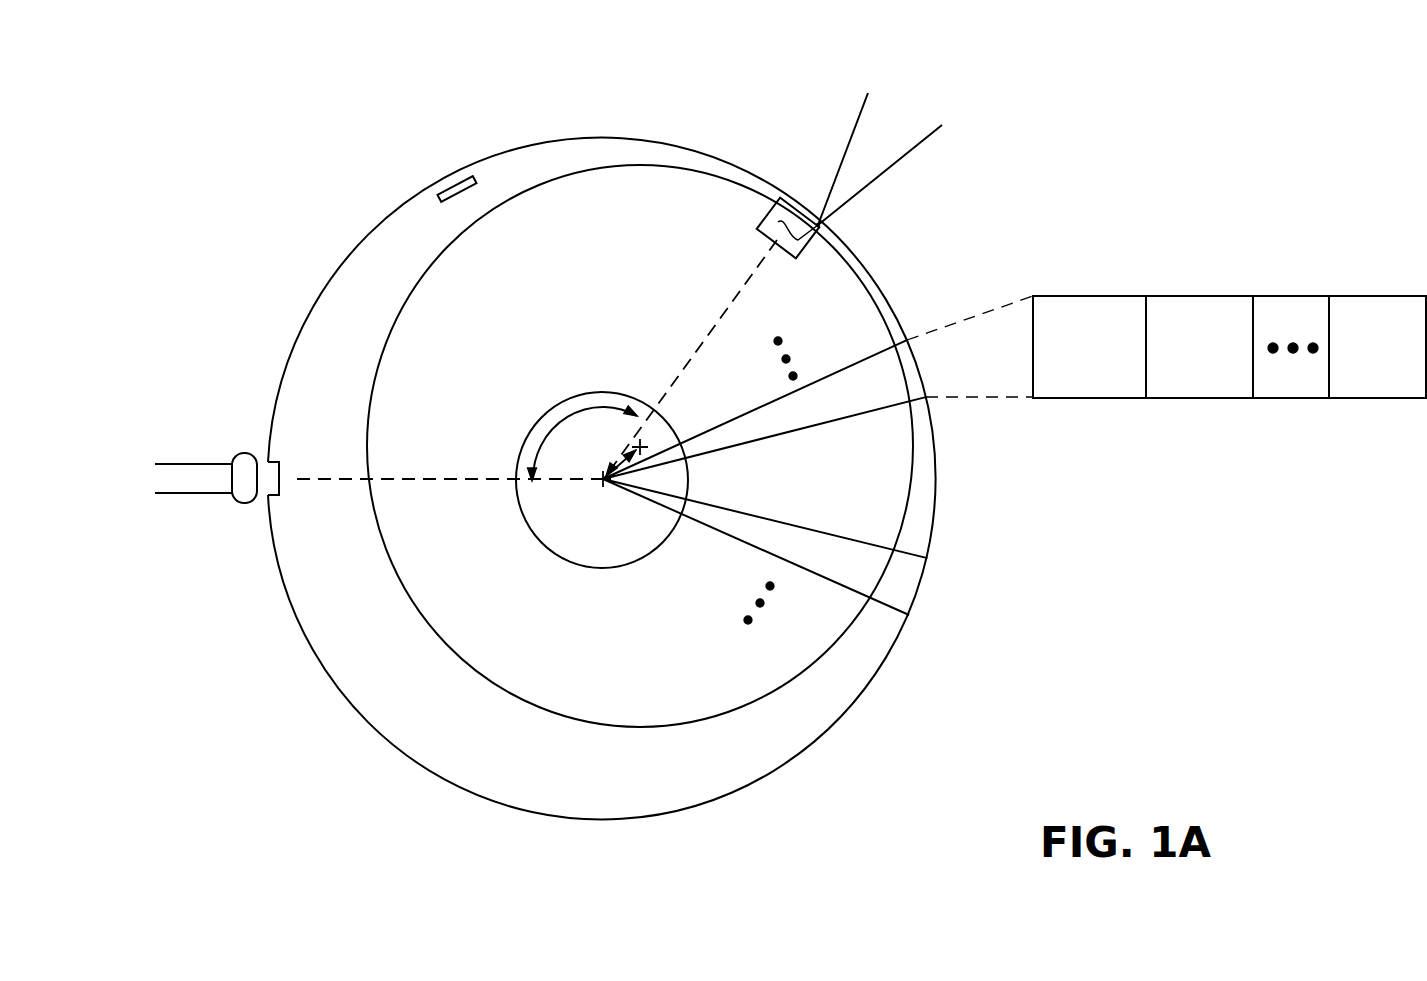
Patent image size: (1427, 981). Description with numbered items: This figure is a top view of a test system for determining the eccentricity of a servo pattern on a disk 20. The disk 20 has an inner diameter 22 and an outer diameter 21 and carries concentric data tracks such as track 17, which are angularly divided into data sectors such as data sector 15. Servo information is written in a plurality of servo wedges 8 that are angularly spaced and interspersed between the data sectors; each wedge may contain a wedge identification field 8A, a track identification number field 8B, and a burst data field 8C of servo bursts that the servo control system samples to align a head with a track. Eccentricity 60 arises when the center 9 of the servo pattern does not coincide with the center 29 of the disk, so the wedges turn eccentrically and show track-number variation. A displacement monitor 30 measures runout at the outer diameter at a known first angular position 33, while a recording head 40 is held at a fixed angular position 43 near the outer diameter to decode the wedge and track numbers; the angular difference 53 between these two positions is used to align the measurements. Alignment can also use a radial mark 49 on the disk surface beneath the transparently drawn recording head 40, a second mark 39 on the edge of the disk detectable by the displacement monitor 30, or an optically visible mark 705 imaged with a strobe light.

The disk 20 is at (572, 471).
The outer diameter (OD) 21 is at (822, 740).
The inner diameter (ID) 22 is at (517, 512).
The second mark 39 is at (270, 473).
The displacement monitor 30 is at (188, 495).
The optically visible mark 705 is at (460, 175).
The track 17 is at (862, 617).
The first angular position 33 is at (433, 478).
The center of the disk 29 is at (603, 483).
The center of the servo pattern 9 is at (650, 440).
The eccentricity 60 is at (648, 463).
The angular difference 53 is at (551, 429).
The fixed angular position 43 is at (711, 332).
The recording head 40 is at (790, 197).
The radial mark 49 is at (820, 227).
The servo wedges 8 is at (897, 380).
The data sector 15 is at (882, 493).
The wedge identification field 8A is at (1078, 381).
The track identification number field 8B is at (1188, 381).
The burst data field 8C is at (1366, 381).